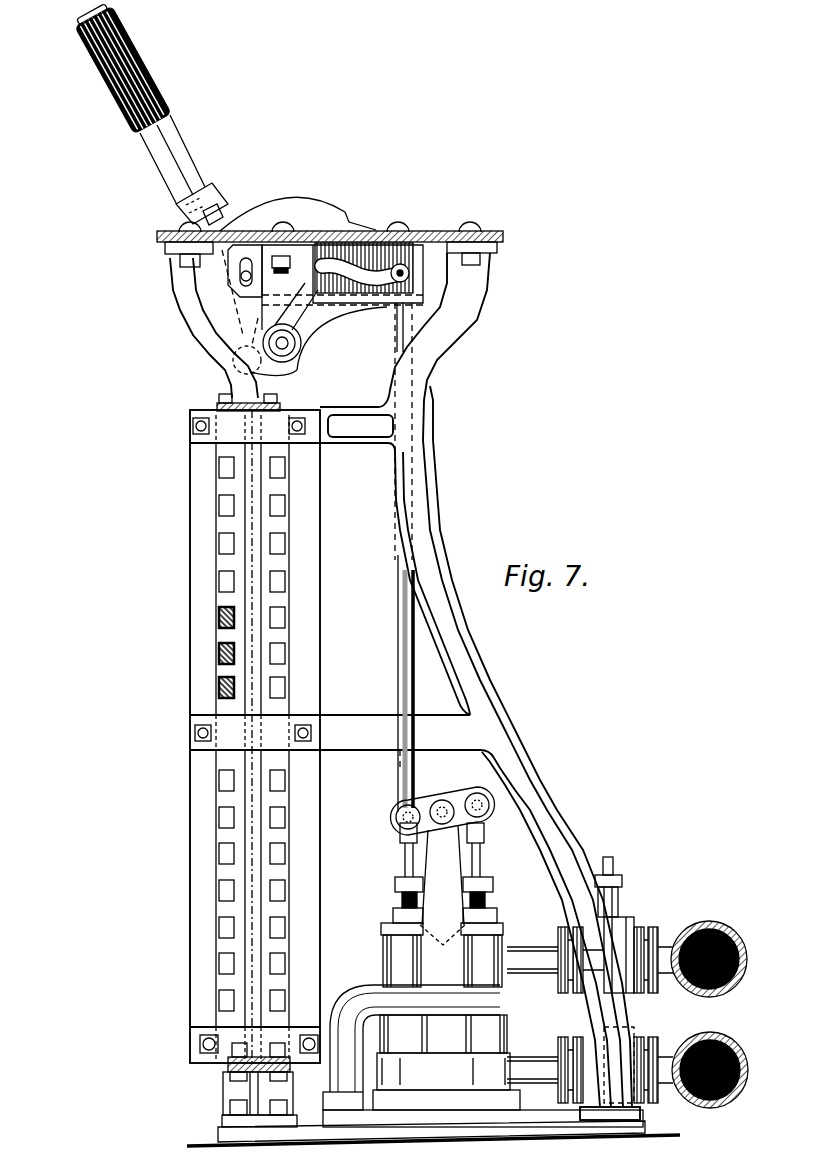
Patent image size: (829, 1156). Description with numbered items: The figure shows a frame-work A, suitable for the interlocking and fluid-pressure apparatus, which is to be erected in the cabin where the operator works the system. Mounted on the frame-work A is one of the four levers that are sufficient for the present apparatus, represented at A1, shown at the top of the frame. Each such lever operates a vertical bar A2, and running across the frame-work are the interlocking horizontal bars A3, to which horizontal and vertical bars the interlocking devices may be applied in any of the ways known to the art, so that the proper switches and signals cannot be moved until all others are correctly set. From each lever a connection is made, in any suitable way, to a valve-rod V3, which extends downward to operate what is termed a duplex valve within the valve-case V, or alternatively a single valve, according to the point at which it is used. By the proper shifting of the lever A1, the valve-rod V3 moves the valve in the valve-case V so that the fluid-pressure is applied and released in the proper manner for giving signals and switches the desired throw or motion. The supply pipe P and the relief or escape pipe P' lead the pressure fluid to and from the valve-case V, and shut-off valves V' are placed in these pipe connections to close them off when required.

The lever A1 is at (150, 113).
The frame-work A is at (405, 690).
The vertical bar A2 is at (248, 378).
The interlocking horizontal bars A3 is at (219, 688).
The valve-rod V3 is at (395, 557).
The valve-case V is at (416, 948).
The shut-off valves V' is at (628, 980).
The supply pipe P is at (716, 959).
The relief or escape pipe P' is at (718, 1070).